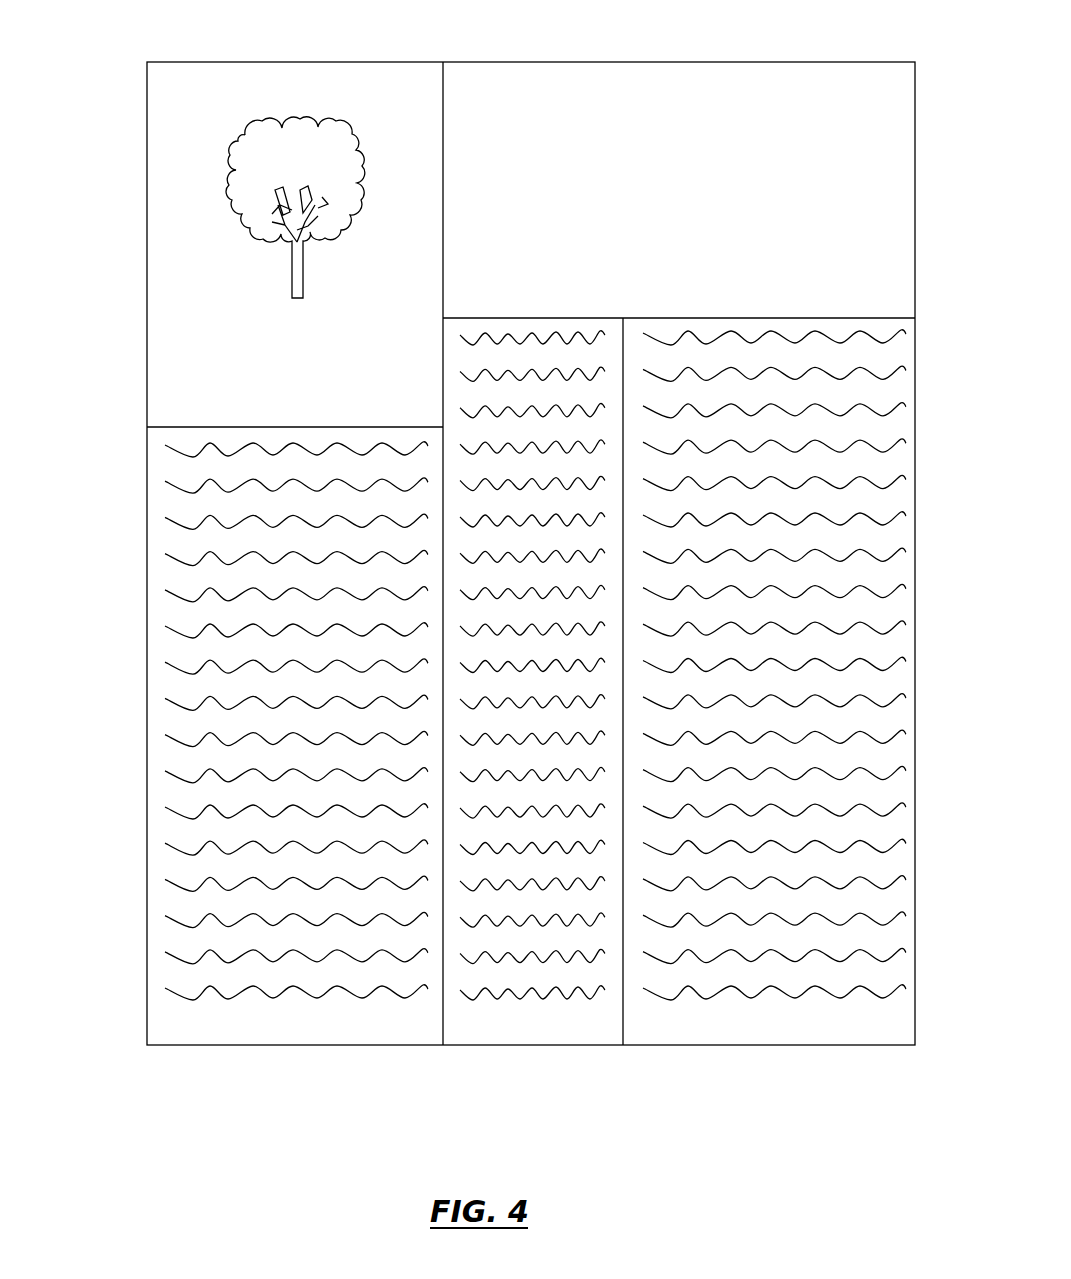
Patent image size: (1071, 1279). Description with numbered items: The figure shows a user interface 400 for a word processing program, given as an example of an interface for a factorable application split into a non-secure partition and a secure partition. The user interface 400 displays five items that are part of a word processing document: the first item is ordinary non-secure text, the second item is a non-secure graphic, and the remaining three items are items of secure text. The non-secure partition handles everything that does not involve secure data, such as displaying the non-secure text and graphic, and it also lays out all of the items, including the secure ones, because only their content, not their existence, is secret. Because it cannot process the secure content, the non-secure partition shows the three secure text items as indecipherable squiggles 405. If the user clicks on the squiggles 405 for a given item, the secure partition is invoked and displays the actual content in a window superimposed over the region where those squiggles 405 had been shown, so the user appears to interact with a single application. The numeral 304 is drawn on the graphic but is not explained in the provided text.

The user interface 400 is at (847, 36).
The image 304 is at (220, 172).
The indecipherable squiggles 405 is at (195, 898).